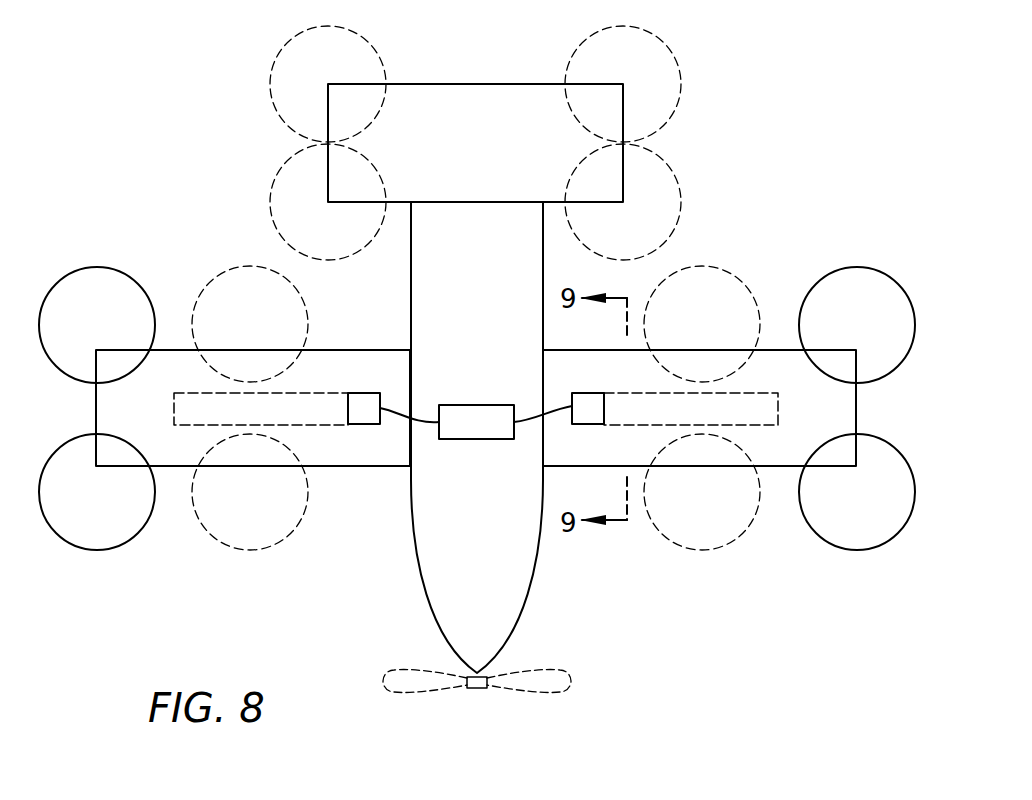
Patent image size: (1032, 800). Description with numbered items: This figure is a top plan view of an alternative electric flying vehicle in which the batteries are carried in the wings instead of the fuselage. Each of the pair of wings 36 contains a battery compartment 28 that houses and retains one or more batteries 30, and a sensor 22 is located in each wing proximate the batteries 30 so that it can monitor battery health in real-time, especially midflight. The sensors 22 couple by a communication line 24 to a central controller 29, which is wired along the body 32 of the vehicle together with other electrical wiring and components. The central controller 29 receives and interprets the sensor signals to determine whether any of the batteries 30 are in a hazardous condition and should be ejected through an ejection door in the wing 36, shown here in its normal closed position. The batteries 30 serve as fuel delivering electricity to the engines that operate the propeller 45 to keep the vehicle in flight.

The sensor 22 is at (363, 392).
The communication line 24 is at (410, 413).
The battery compartment 28 is at (183, 447).
The central controller 29 is at (455, 439).
The battery 30 is at (197, 392).
The body 32 is at (510, 610).
The wing 36 is at (96, 410).
The propeller 45 is at (425, 672).